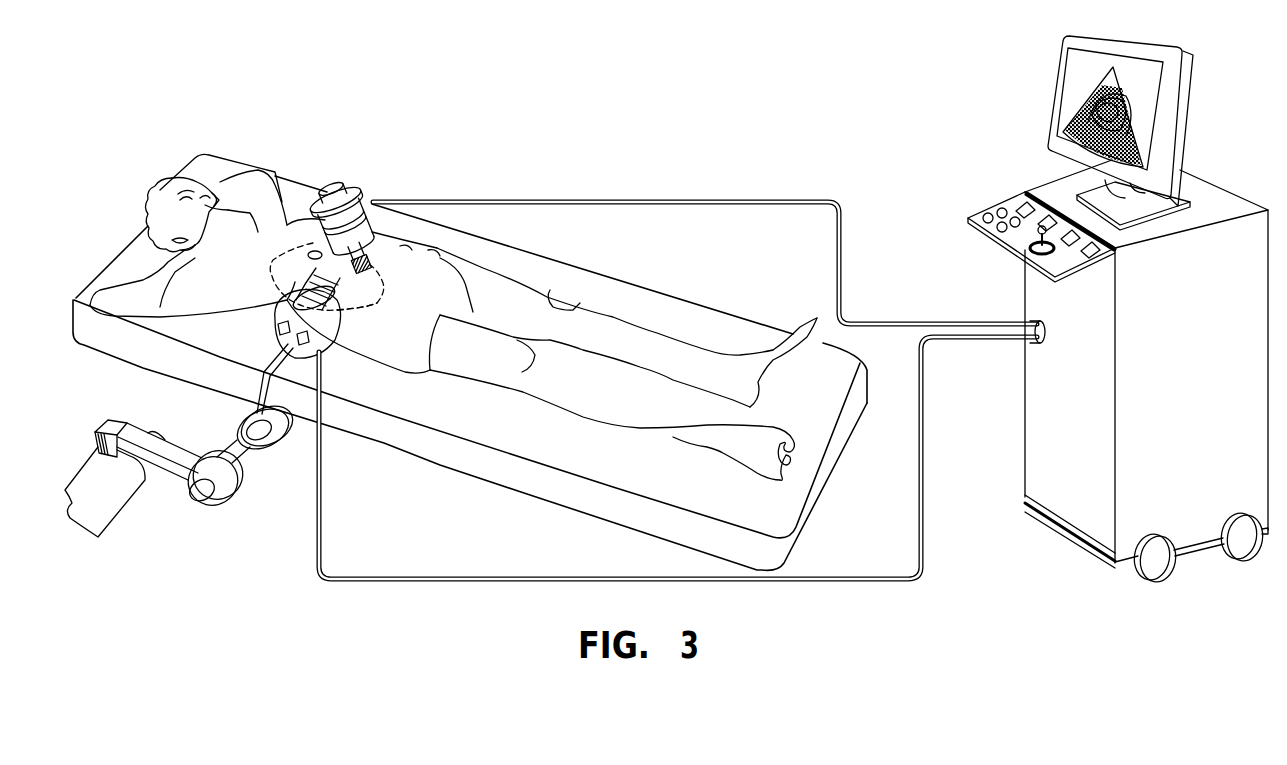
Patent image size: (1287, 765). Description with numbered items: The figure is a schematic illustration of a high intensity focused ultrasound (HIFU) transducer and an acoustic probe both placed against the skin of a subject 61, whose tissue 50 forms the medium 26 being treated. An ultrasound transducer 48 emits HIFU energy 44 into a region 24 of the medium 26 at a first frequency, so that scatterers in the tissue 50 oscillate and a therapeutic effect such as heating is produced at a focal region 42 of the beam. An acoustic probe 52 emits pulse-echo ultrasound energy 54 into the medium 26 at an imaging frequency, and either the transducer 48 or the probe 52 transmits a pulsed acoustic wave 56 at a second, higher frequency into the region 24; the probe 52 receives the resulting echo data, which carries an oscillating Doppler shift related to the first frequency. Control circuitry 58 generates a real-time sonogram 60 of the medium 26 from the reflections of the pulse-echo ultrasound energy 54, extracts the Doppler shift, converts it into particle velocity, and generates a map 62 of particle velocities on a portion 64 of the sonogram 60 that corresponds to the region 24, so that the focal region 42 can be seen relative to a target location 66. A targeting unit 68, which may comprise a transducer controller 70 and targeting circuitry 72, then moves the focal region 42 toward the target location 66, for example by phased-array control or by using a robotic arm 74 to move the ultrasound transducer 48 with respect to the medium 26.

The region 24 is at (308, 278).
The medium 26 is at (329, 192).
The tissue 50 is at (307, 232).
The focal region 42 is at (358, 263).
The HIFU energy 44 is at (352, 262).
The ultrasound transducer 48 is at (323, 328).
The acoustic probe 52 is at (362, 205).
The pulse-echo ultrasound energy 54 is at (381, 304).
The pulsed acoustic wave 56 is at (318, 240).
The control circuitry 58 is at (999, 148).
The real-time sonogram 60 is at (1148, 68).
The subject 61 is at (160, 177).
The map of particle-velocities 62 is at (1166, 117).
The portion of sonogram 64 is at (1127, 88).
The target location 66 is at (308, 255).
The targeting unit 68 is at (238, 510).
The transducer controller 70 is at (273, 337).
The targeting circuitry 72 is at (322, 352).
The robotic arm 74 is at (226, 446).